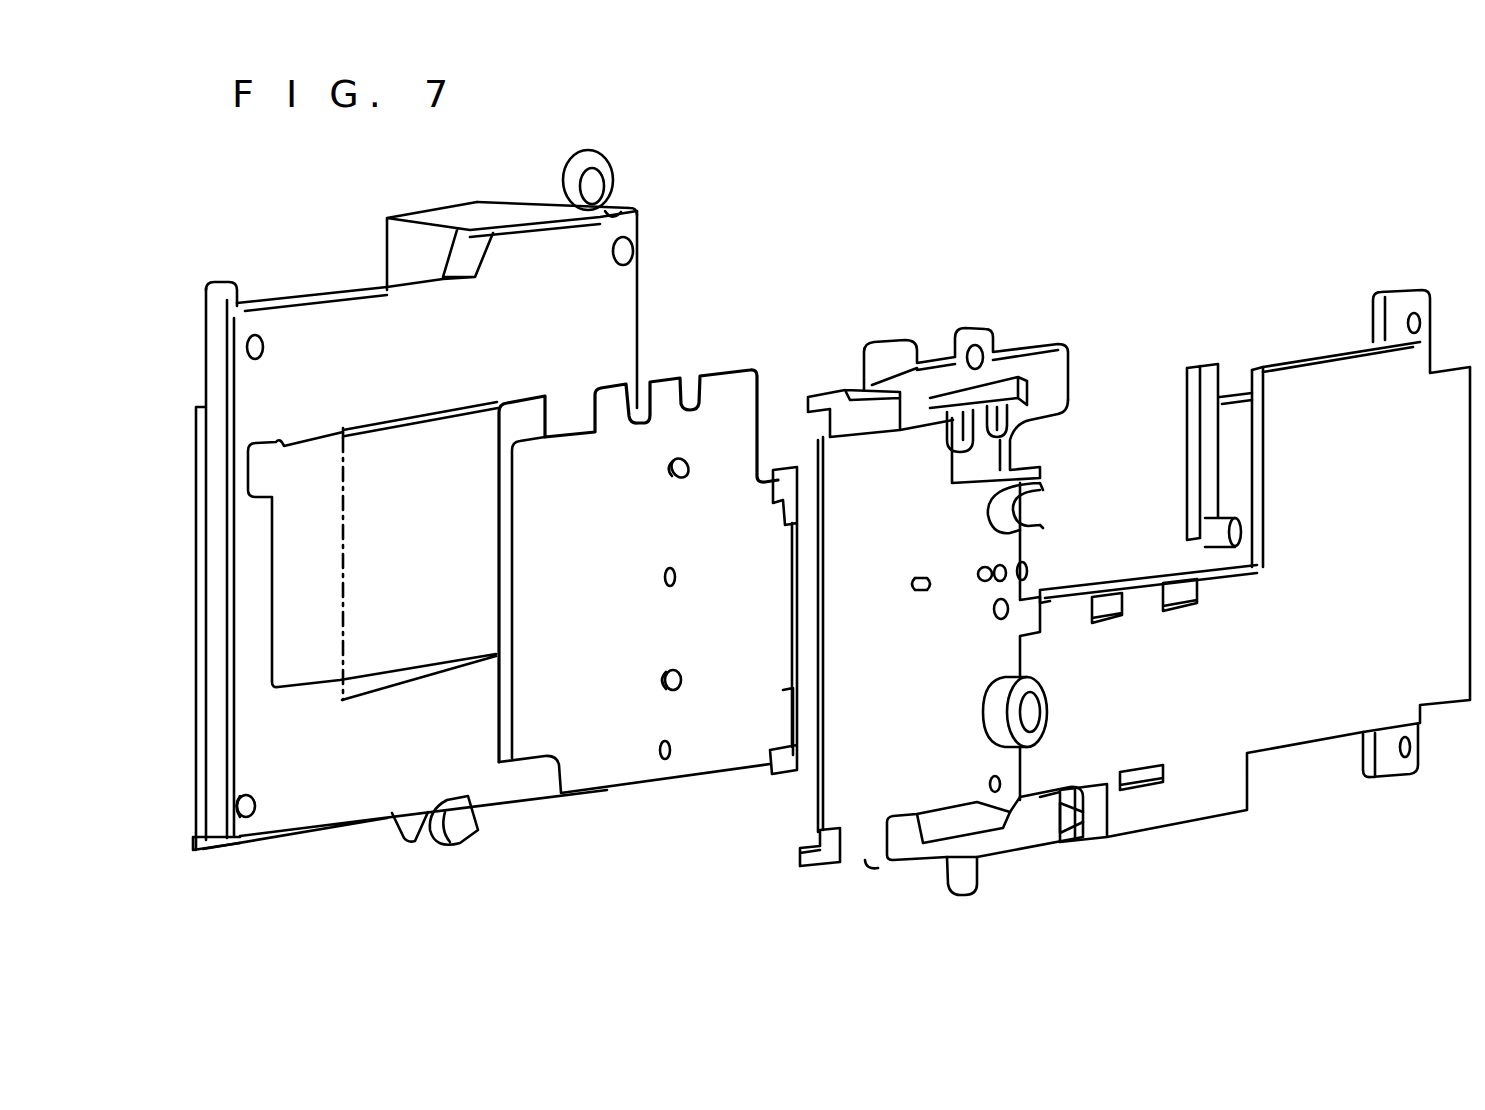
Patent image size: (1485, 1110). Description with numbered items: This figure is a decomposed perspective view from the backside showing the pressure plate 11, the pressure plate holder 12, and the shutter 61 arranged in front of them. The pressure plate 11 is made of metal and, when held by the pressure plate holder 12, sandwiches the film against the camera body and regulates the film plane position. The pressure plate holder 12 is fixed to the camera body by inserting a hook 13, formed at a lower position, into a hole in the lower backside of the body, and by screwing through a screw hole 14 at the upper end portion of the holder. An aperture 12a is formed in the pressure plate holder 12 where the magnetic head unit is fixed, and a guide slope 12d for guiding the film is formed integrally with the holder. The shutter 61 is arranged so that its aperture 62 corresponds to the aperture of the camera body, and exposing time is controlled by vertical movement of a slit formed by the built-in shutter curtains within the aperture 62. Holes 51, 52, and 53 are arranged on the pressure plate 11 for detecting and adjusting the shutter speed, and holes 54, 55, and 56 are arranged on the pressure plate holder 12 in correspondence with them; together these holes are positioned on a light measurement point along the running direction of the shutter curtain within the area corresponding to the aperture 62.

The pressure plate 11 is at (638, 545).
The pressure plate holder 12 is at (974, 585).
The aperture 12a is at (1173, 452).
The guide slope 12d is at (785, 475).
The hook 13 is at (975, 880).
The screw hole 14 is at (985, 350).
The hole 51 is at (690, 467).
The hole 52 is at (680, 578).
The hole 53 is at (685, 681).
The hole 54 is at (1033, 477).
The hole 55 is at (1007, 600).
The hole 56 is at (1040, 703).
The shutter 61 is at (543, 248).
The aperture 62 is at (268, 604).